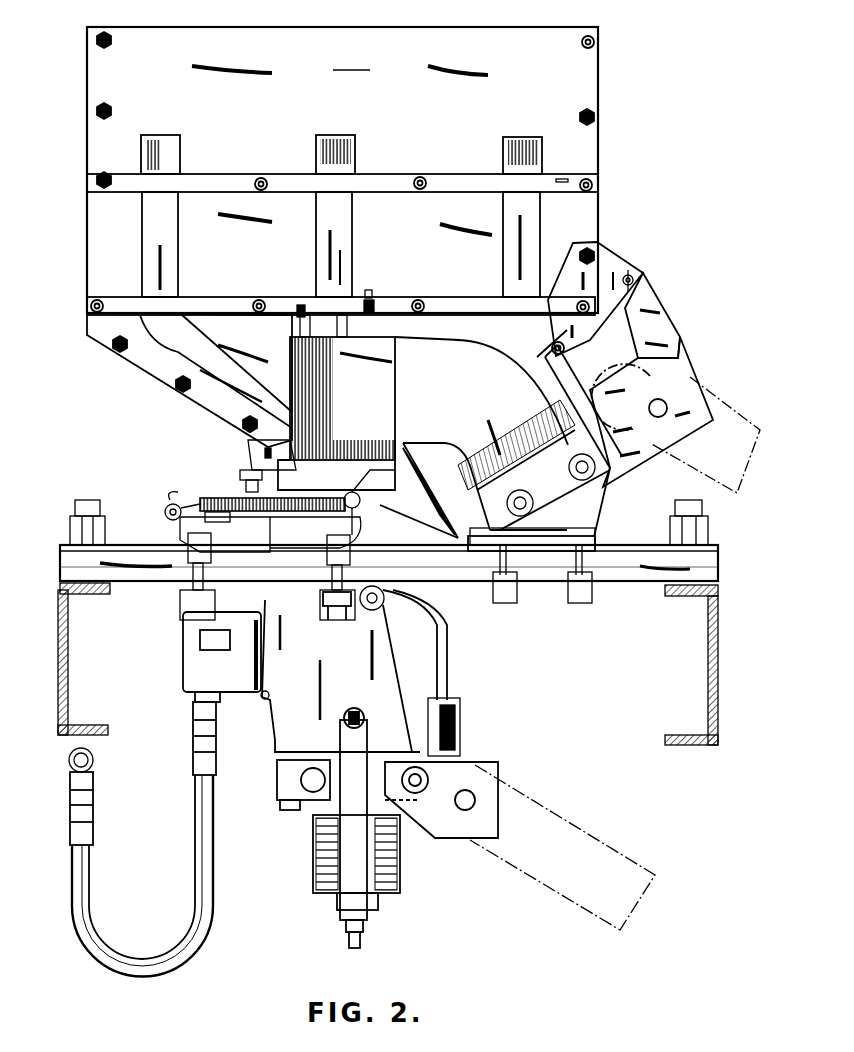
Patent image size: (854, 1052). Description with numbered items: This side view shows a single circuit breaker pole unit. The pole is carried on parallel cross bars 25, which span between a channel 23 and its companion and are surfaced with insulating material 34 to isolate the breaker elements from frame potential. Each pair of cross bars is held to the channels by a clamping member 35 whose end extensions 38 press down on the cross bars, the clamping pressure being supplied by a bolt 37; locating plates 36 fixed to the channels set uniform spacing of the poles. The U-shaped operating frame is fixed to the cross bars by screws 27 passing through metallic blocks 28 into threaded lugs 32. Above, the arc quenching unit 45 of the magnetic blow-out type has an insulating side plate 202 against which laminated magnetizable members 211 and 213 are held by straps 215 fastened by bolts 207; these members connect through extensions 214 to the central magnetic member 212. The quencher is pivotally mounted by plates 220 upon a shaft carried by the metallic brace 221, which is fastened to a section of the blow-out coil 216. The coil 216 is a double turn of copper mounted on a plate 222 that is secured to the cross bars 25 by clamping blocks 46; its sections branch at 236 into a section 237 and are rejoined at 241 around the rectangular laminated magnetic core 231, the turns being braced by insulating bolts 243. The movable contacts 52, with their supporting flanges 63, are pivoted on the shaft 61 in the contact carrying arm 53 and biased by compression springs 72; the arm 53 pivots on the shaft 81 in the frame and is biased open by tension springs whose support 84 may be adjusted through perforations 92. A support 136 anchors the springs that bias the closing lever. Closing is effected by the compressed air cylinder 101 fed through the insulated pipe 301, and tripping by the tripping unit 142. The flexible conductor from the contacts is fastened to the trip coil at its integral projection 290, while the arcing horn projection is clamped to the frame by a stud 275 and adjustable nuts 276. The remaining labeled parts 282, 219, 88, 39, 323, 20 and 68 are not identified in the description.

The arc quenching unit 45 is at (362, 24).
The insulating plate 202 is at (351, 63).
The magnetizable member 211 is at (172, 128).
The central magnetic member 212 is at (347, 128).
The magnetizable member 213 is at (530, 130).
The bolts 207 is at (264, 180).
The straps 215 is at (558, 178).
The extensions 214 is at (300, 300).
The hopper 282 is at (432, 342).
The junction of coil sections 241 is at (455, 498).
The contact carrying member 53 is at (378, 542).
The coil 216 is at (570, 385).
The insulating bolts 243 is at (570, 470).
The plates 220 is at (604, 262).
The pin 219 is at (636, 280).
The metallic brace 221 is at (658, 316).
The coil section 237 is at (688, 372).
The branch point 236 is at (725, 412).
The stud 275 is at (255, 444).
The adjustable nuts 276 is at (250, 452).
The movable contacts 52 is at (272, 517).
The support 84 is at (166, 508).
The perforations 92 is at (172, 502).
The block 88 is at (205, 514).
The compression springs 72 is at (332, 522).
The shaft 61 is at (352, 493).
The supporting flange 63 is at (380, 470).
The cross bars 25 is at (712, 560).
The clamping member 35 is at (403, 573).
The flange 39 is at (715, 588).
The channel 23 is at (58, 635).
The insulating material 34 is at (718, 645).
The bolt 37 is at (75, 505).
The end extensions 38 is at (70, 525).
The locating plates 36 is at (708, 530).
The plate 222 is at (590, 550).
The stud 323 is at (541, 560).
The clamping blocks 46 is at (568, 598).
The block 20 is at (211, 552).
The screws 27 is at (204, 574).
The compressed air cylinder 101 is at (183, 650).
The insulated pipe 301 is at (143, 839).
The lugs 32 is at (93, 758).
The metallic blocks 28 is at (341, 672).
The shaft 81 is at (385, 600).
The lever 68 is at (438, 615).
The integral projection 290 is at (440, 700).
The support 136 is at (270, 693).
The tripping unit 142 is at (312, 850).
The magnetic core 231 is at (530, 810).